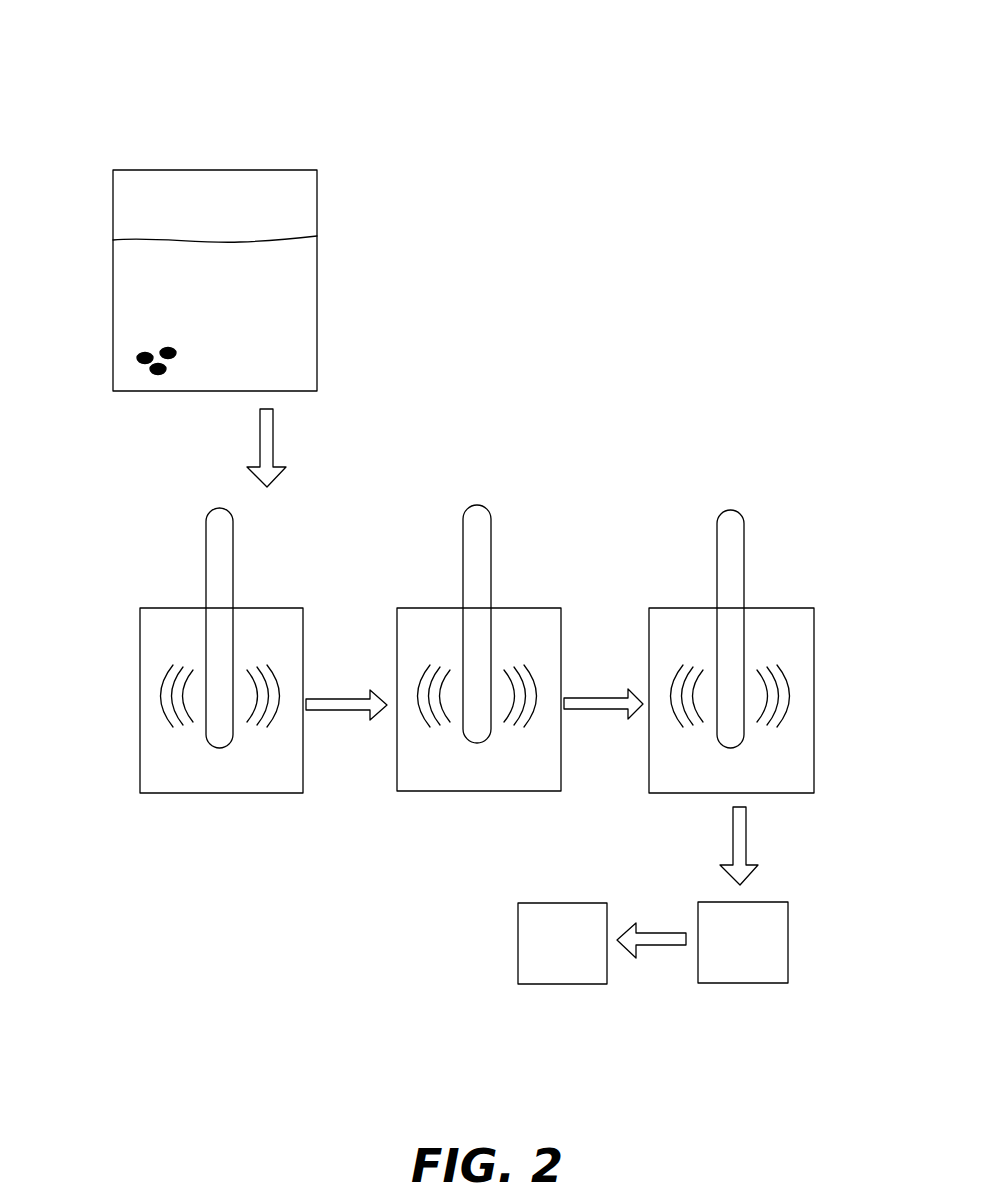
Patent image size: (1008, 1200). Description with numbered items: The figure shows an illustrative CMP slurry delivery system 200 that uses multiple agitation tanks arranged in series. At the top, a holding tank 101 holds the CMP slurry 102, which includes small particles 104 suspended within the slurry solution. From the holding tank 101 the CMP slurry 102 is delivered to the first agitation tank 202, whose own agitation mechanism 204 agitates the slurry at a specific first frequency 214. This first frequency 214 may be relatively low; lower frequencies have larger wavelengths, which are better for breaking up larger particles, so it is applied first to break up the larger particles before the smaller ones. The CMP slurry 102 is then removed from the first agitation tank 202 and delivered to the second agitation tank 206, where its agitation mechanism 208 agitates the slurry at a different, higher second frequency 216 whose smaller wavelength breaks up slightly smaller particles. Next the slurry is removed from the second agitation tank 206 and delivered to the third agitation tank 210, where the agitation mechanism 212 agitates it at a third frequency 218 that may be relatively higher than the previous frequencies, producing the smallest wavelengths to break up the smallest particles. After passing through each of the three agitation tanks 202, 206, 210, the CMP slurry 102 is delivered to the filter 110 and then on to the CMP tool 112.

The CMP slurry delivery system 200 is at (226, 122).
The holding tank 101 is at (215, 212).
The CMP slurry 102 is at (215, 280).
The small particles 104 is at (158, 375).
The first agitation tank 202 is at (221, 700).
The agitation mechanism 204 is at (233, 555).
The second agitation tank 206 is at (479, 699).
The agitation mechanism 208 is at (491, 553).
The third agitation tank 210 is at (731, 700).
The agitation mechanism 212 is at (744, 557).
The first frequency 214 is at (163, 679).
The second frequency 216 is at (421, 683).
The third frequency 218 is at (673, 678).
The filter 110 is at (743, 942).
The CMP tool 112 is at (562, 943).